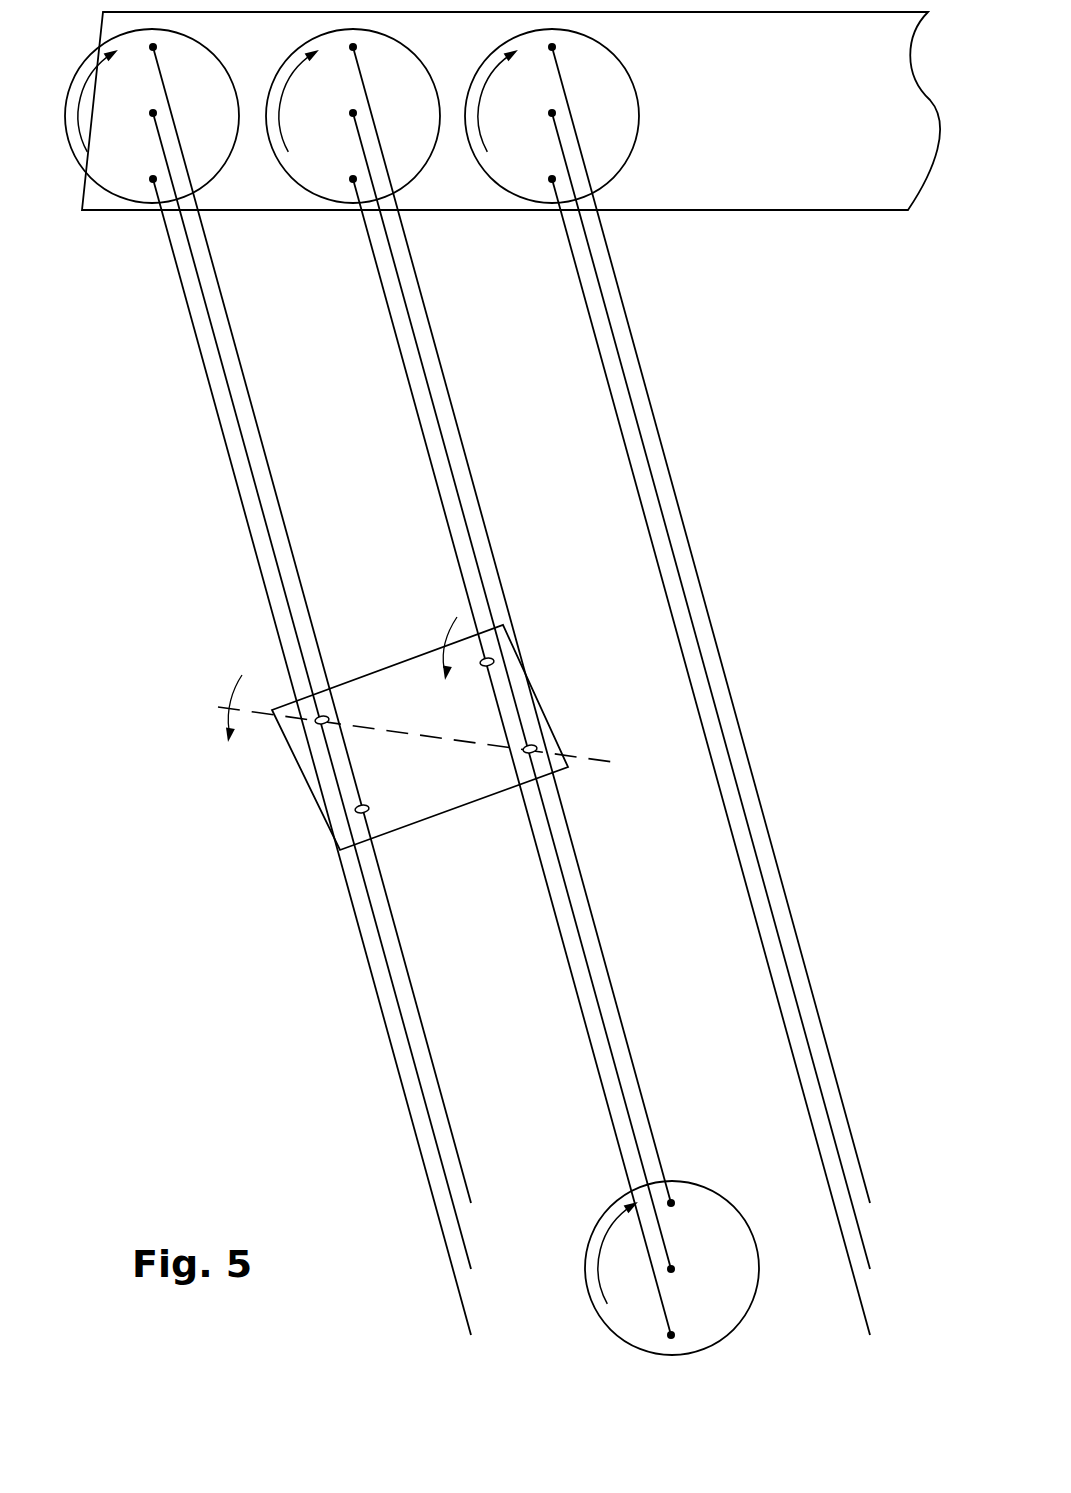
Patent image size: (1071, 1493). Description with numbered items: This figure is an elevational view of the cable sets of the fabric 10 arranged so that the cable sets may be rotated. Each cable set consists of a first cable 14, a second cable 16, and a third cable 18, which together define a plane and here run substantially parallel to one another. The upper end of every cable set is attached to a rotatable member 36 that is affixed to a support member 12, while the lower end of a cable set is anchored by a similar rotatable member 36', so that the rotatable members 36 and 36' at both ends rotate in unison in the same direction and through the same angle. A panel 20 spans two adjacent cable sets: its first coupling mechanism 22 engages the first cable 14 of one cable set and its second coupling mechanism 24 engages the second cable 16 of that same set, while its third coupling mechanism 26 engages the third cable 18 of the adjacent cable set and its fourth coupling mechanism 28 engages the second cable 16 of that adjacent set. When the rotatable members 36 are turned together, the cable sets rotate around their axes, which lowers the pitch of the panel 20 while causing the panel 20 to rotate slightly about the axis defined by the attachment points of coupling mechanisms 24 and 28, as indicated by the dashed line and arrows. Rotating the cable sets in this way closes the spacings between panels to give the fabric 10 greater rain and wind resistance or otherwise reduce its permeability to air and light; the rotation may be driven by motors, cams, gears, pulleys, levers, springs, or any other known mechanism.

The fabric 10 is at (241, 938).
The support member 12 is at (760, 124).
The first cable 14 is at (235, 345).
The second cable 16 is at (197, 275).
The third cable 18 is at (210, 385).
The panel 20 is at (371, 715).
The first coupling mechanism 22 is at (363, 805).
The second coupling mechanism 24 is at (320, 724).
The third coupling mechanism 26 is at (483, 666).
The fourth coupling mechanism 28 is at (528, 753).
The rotatable member 36 is at (352, 116).
The rotatable member 36' is at (672, 1268).